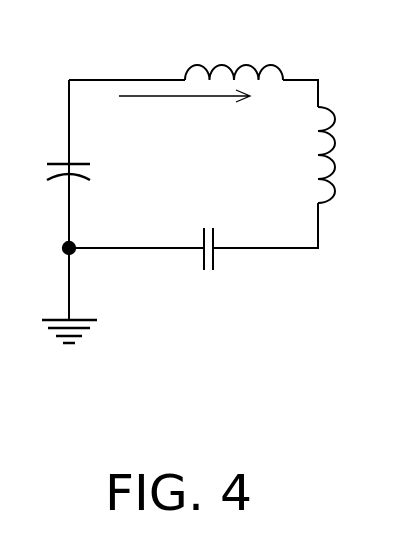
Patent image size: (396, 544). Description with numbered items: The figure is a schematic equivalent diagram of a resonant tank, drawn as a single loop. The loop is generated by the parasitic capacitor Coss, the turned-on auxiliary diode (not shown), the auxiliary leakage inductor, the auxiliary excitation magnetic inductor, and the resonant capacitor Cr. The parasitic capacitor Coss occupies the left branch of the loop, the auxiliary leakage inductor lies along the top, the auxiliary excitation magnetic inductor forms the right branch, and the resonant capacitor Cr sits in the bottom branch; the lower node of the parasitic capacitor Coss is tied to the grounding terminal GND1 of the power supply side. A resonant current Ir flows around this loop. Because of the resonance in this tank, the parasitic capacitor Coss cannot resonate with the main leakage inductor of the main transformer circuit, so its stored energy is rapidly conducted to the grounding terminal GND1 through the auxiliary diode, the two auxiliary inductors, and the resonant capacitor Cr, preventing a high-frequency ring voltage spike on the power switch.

The resonant current Ir is at (184, 111).
The parasitic capacitor Coss is at (100, 181).
The resonant capacitor Cr is at (211, 232).
The grounding terminal GND1 is at (70, 350).